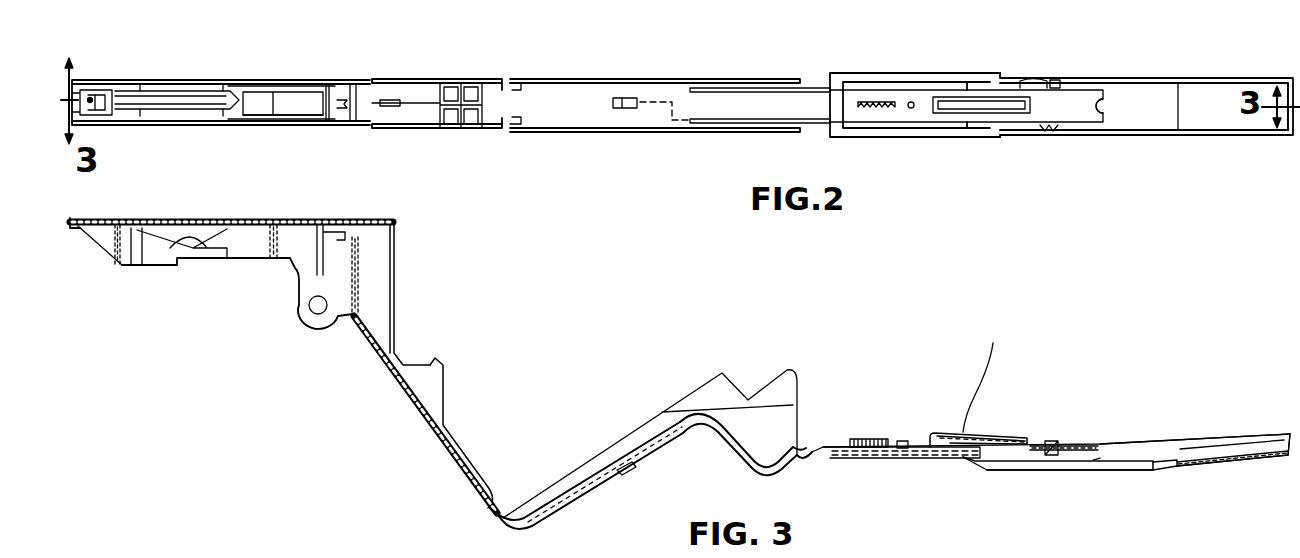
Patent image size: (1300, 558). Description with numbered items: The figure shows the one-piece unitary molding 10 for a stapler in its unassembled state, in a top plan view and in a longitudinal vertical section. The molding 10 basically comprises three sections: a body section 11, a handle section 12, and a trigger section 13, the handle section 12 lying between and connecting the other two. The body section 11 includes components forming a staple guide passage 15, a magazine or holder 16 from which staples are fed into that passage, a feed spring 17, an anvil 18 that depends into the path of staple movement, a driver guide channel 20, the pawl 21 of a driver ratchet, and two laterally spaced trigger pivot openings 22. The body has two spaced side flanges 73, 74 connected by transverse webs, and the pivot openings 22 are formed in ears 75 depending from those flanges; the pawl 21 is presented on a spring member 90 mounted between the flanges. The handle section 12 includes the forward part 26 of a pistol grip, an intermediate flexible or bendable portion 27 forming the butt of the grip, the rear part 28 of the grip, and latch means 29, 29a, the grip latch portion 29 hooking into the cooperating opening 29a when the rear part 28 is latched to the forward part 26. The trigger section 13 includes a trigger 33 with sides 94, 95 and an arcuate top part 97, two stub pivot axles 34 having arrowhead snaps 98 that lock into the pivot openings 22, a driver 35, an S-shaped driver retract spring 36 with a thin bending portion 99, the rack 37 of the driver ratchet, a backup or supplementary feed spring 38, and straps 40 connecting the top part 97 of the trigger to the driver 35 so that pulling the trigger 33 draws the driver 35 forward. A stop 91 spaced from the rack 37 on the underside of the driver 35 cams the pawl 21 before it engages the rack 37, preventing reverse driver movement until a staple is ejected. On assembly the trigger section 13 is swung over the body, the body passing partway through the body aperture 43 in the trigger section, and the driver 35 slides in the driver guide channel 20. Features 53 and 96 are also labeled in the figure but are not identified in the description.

In FIG. 2, the unitary molding 10 is at (726, 36).
In FIG. 3, the unitary molding 10 is at (778, 323).
In FIG. 2, the body section 11 is at (80, 68).
In FIG. 3, the body section 11 is at (73, 206).
In FIG. 2, the handle section 12 is at (388, 142).
In FIG. 3, the handle section 12 is at (400, 213).
In FIG. 2, the trigger section 13 is at (835, 146).
In FIG. 3, the trigger section 13 is at (832, 477).
In FIG. 3, the staple guide passage 15 is at (107, 236).
In FIG. 2, the magazine or holder 16 is at (130, 132).
In FIG. 3, the magazine or holder 16 is at (131, 272).
In FIG. 2, the feed spring 17 is at (180, 101).
In FIG. 3, the feed spring 17 is at (195, 252).
In FIG. 2, the anvil 18 is at (91, 100).
In FIG. 3, the anvil 18 is at (97, 219).
In FIG. 3, the driver guide channel 20 is at (230, 229).
In FIG. 2, the pawl 21 is at (333, 98).
In FIG. 3, the pawl 21 is at (347, 230).
In FIG. 3, the trigger pivot openings 22 is at (314, 325).
In FIG. 2, the forward part of pistol grip 26 is at (432, 88).
In FIG. 3, the forward part of pistol grip 26 is at (420, 407).
In FIG. 2, the intermediate flexible portion 27 is at (505, 100).
In FIG. 3, the intermediate flexible portion 27 is at (497, 525).
In FIG. 2, the rear part of grip 28 is at (597, 92).
In FIG. 3, the rear part of grip 28 is at (602, 488).
In FIG. 2, the grip latch portion 29 is at (426, 106).
In FIG. 3, the grip latch portion 29 is at (444, 360).
In FIG. 2, the cooperating opening 29a is at (614, 106).
In FIG. 3, the cooperating opening 29a is at (624, 464).
In FIG. 2, the trigger 33 is at (1210, 77).
In FIG. 3, the trigger 33 is at (1233, 446).
In FIG. 2, the stub pivot axles 34 is at (1056, 80).
In FIG. 3, the stub pivot axles 34 is at (1052, 442).
In FIG. 2, the driver 35 is at (1050, 108).
In FIG. 3, the driver 35 is at (1020, 465).
In FIG. 2, the driver retract spring 36 is at (750, 100).
In FIG. 3, the driver retract spring 36 is at (748, 466).
In FIG. 2, the rack 37 is at (876, 100).
In FIG. 3, the rack 37 is at (858, 438).
In FIG. 2, the backup feed spring 38 is at (948, 104).
In FIG. 3, the backup feed spring 38 is at (1000, 432).
In FIG. 2, the connecting straps 40 is at (860, 73).
In FIG. 3, the connecting straps 40 is at (870, 460).
In FIG. 2, the body aperture 43 is at (1152, 100).
In FIG. 3, the body aperture 43 is at (1158, 470).
In FIG. 2, the notch 53 is at (1108, 106).
In FIG. 3, the notch 53 is at (1097, 458).
In FIG. 2, the side flange 73 is at (245, 82).
In FIG. 3, the side flange 73 is at (250, 258).
In FIG. 2, the side flange 74 is at (255, 127).
In FIG. 3, the ears 75 is at (300, 316).
In FIG. 2, the spring member 90 is at (338, 110).
In FIG. 3, the spring member 90 is at (335, 250).
In FIG. 2, the stop 91 is at (913, 102).
In FIG. 3, the stop 91 is at (906, 440).
In FIG. 2, the trigger side 94 is at (1112, 74).
In FIG. 3, the trigger side 94 is at (1158, 453).
In FIG. 2, the trigger side 95 is at (1138, 135).
In FIG. 2, the bottom wall 96 is at (1210, 120).
In FIG. 3, the bottom wall 96 is at (1220, 468).
In FIG. 3, the top part of trigger 97 is at (992, 375).
In FIG. 2, the arrowhead snaps 98 is at (1026, 80).
In FIG. 3, the thin bending portion 99 is at (803, 470).